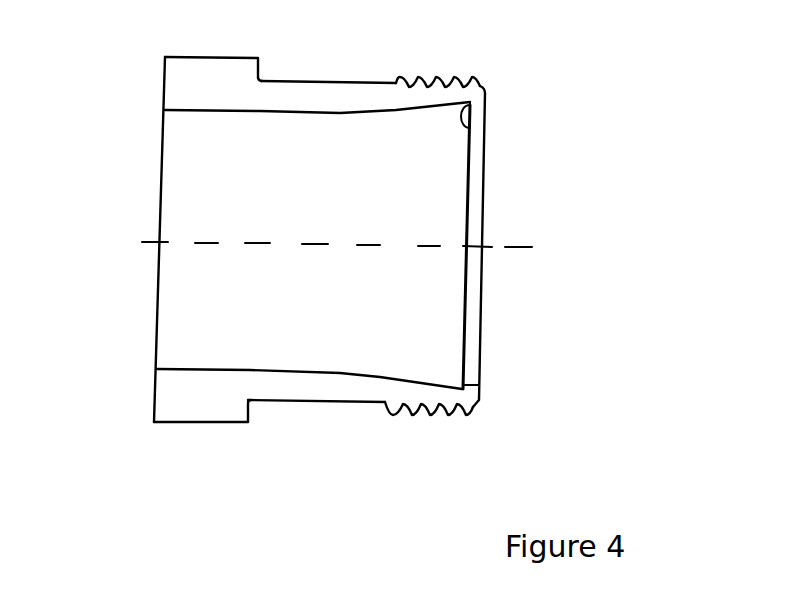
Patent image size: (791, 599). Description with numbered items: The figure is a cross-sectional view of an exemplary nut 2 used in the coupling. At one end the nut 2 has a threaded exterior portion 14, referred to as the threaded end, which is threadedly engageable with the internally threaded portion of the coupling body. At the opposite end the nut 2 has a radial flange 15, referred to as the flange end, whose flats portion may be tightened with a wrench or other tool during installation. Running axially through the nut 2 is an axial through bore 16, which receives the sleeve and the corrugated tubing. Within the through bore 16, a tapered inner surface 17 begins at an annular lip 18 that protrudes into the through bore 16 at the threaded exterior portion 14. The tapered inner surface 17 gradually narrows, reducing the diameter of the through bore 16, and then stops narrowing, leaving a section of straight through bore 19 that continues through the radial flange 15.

The nut 2 is at (612, 92).
The threaded exterior portion 14 is at (433, 78).
The radial flange 15 is at (195, 67).
The axial through bore 16 is at (361, 248).
The tapered inner surface 17 is at (412, 379).
The annular lip 18 is at (462, 130).
The straight through bore 19 is at (205, 365).